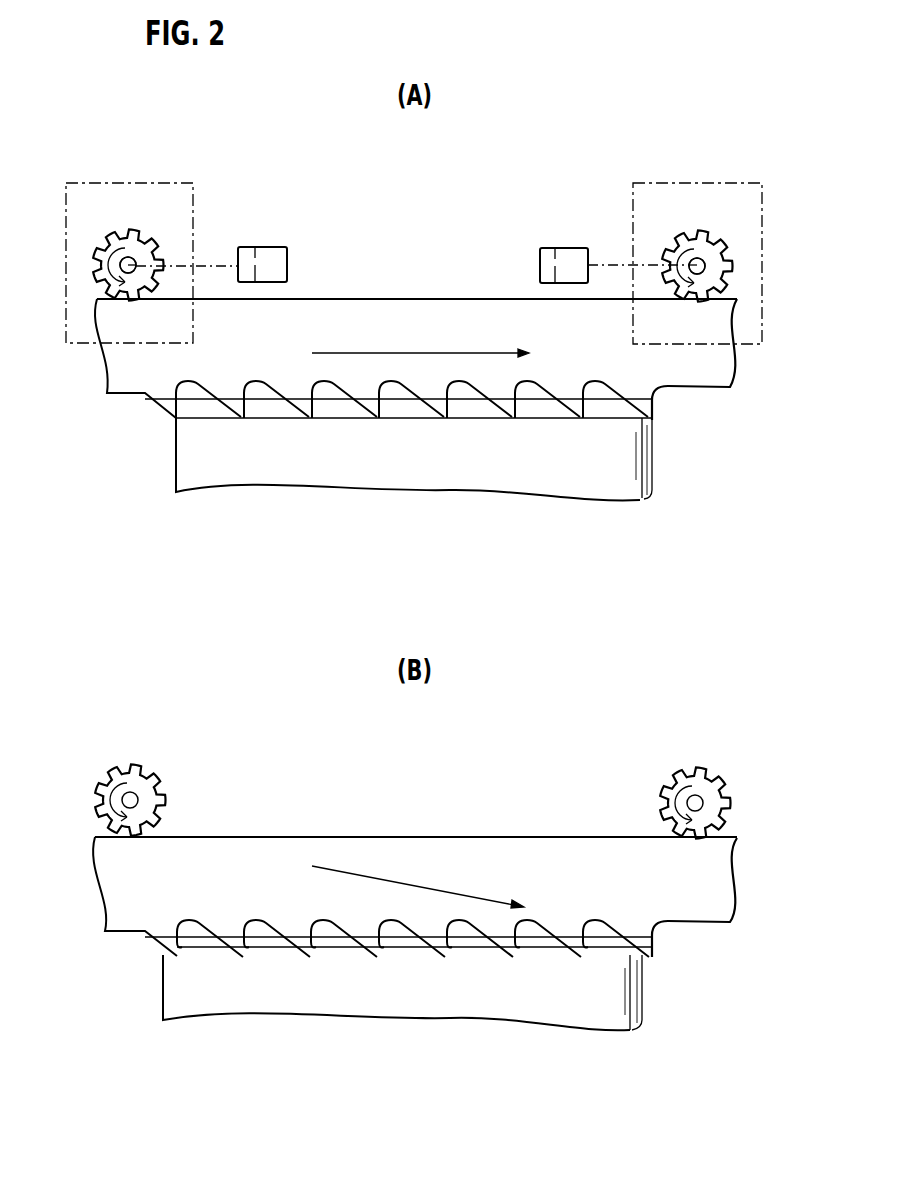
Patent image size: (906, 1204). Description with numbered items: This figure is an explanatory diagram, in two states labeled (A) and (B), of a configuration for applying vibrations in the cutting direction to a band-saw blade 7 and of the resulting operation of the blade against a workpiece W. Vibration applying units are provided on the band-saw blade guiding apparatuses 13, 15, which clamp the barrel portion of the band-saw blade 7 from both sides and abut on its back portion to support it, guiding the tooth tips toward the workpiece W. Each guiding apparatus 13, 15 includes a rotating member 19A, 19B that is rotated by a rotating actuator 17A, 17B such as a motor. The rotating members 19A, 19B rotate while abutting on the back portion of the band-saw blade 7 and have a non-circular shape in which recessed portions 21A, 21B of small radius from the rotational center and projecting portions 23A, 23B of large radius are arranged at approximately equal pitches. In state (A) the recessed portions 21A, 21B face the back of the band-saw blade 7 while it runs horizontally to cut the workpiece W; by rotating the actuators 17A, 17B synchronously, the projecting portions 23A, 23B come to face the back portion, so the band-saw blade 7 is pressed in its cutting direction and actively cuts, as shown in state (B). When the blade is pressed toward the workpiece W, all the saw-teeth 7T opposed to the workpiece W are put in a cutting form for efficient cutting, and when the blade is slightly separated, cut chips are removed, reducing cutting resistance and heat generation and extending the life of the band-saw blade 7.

The band-saw blade 7 is at (418, 299).
The saw-teeth 7T is at (240, 403).
The band-saw blade guiding apparatus 13 is at (700, 183).
The band-saw blade guiding apparatus 15 is at (99, 183).
The rotating actuator 17A is at (570, 248).
The rotating actuator 17B is at (270, 247).
The rotating member 19A is at (725, 250).
The rotating member 19B is at (100, 248).
The recessed portion 21A is at (730, 265).
The recessed portion 21B is at (100, 265).
The projecting portion 23A is at (730, 285).
The projecting portion 23B is at (100, 284).
The workpiece W is at (640, 460).